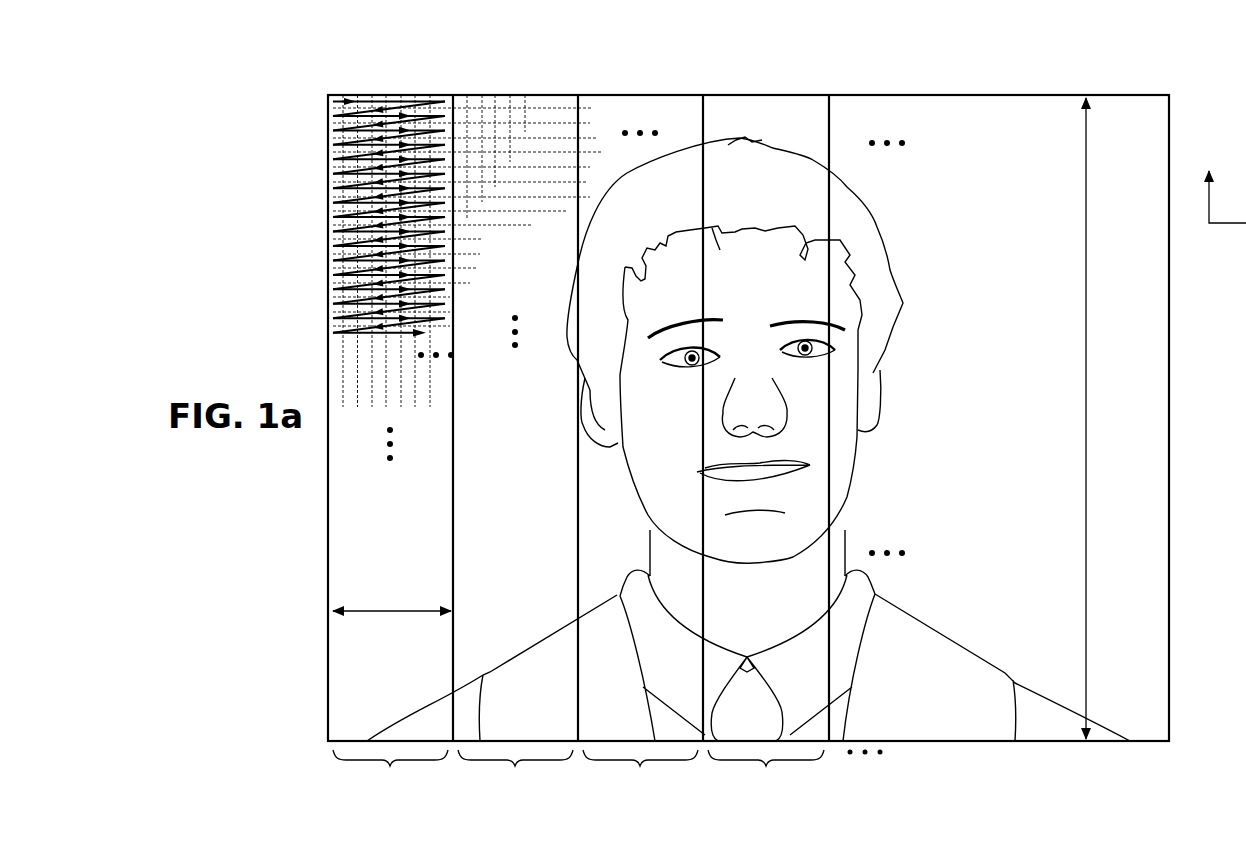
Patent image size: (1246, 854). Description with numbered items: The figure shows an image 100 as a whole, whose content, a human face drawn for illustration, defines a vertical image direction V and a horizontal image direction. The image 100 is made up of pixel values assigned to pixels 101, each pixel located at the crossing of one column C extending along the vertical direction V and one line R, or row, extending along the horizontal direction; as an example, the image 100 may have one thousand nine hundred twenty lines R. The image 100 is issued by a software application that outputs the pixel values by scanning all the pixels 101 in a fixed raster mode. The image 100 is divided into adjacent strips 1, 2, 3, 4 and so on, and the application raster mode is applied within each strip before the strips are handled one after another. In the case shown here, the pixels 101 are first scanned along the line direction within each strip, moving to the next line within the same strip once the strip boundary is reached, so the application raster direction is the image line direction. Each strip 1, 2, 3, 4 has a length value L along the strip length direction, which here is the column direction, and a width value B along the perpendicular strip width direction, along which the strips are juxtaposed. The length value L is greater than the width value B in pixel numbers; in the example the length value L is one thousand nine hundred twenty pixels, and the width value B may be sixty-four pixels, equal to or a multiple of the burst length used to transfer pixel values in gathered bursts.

The image 100 is at (303, 593).
The pixels 101 is at (503, 102).
The line R is at (322, 144).
The column C is at (368, 90).
The width value B is at (392, 599).
The length value L is at (1098, 418).
The vertical image direction V is at (1227, 185).
The strip 1 is at (390, 772).
The strip 2 is at (515, 772).
The strip 3 is at (640, 772).
The strip 4 is at (766, 772).